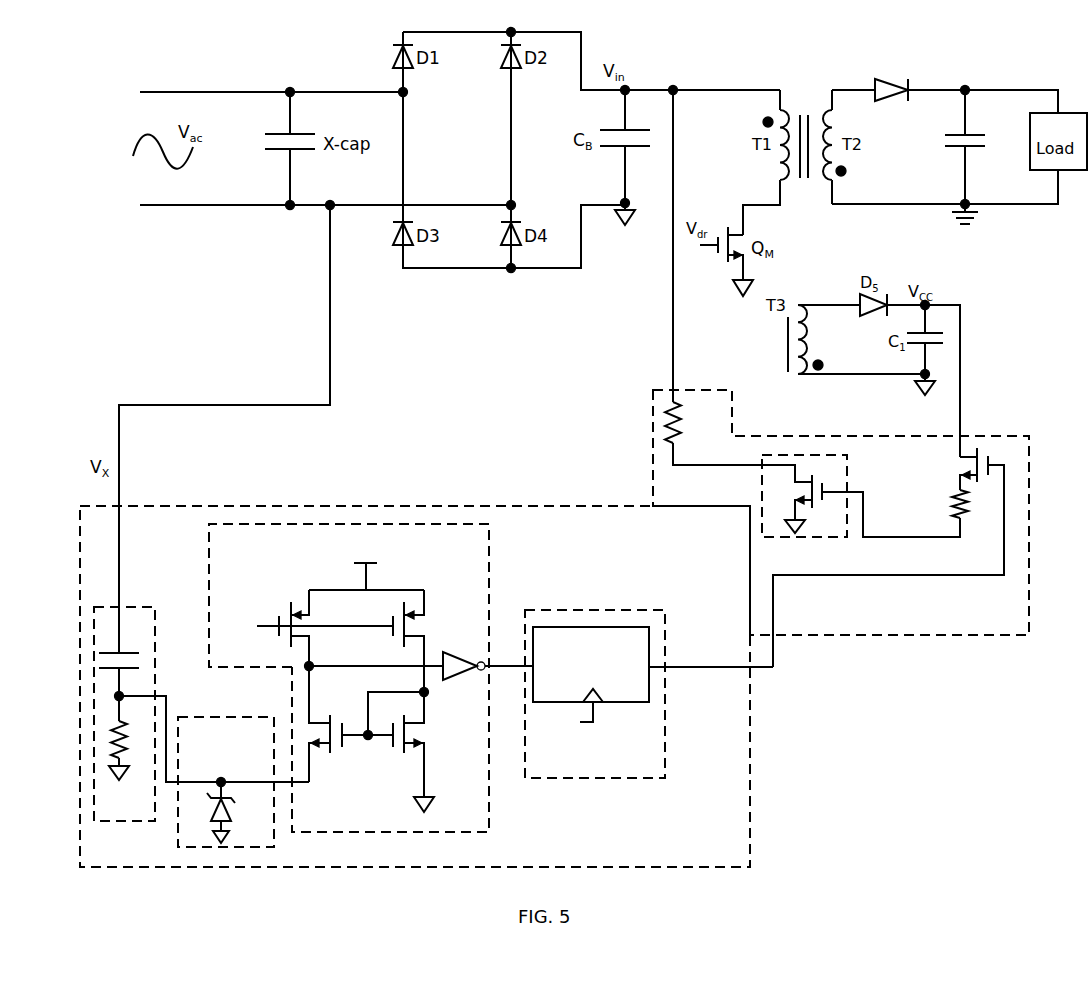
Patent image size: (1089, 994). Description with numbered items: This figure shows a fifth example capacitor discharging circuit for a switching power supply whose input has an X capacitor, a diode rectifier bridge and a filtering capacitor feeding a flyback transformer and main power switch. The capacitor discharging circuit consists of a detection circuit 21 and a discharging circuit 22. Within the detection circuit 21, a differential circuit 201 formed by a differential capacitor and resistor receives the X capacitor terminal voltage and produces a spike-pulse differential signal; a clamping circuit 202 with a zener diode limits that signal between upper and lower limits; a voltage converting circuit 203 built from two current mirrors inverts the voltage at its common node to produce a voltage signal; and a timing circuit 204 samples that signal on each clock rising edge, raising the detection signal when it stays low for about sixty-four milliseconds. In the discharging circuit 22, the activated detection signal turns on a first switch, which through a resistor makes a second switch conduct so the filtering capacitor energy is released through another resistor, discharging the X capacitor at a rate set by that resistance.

The detection circuit 21 is at (426, 686).
The discharging circuit 22 is at (841, 378).
The differential circuit 201 is at (201, 714).
The clamping circuit 202 is at (226, 782).
The voltage converting circuit 203 is at (392, 759).
The timing circuit 204 is at (649, 694).